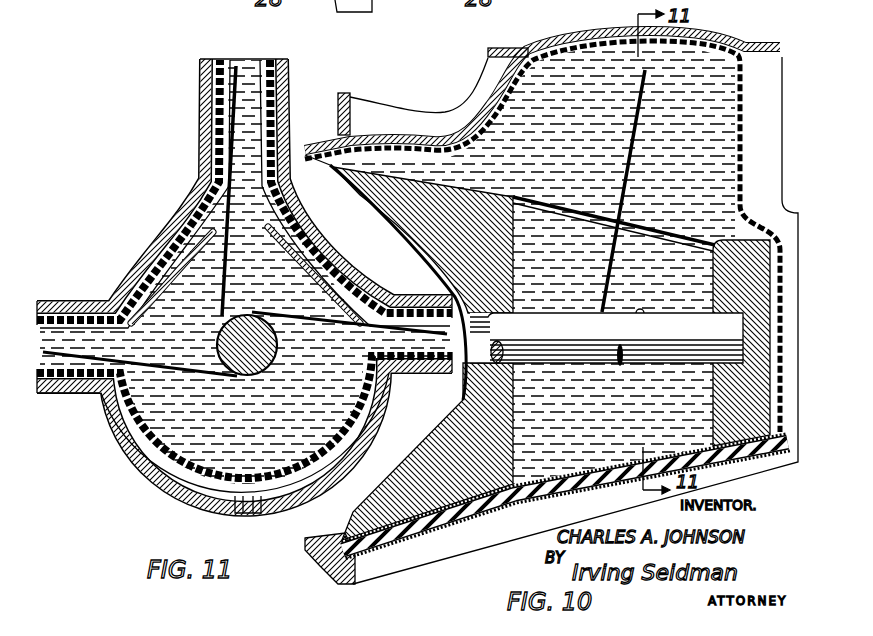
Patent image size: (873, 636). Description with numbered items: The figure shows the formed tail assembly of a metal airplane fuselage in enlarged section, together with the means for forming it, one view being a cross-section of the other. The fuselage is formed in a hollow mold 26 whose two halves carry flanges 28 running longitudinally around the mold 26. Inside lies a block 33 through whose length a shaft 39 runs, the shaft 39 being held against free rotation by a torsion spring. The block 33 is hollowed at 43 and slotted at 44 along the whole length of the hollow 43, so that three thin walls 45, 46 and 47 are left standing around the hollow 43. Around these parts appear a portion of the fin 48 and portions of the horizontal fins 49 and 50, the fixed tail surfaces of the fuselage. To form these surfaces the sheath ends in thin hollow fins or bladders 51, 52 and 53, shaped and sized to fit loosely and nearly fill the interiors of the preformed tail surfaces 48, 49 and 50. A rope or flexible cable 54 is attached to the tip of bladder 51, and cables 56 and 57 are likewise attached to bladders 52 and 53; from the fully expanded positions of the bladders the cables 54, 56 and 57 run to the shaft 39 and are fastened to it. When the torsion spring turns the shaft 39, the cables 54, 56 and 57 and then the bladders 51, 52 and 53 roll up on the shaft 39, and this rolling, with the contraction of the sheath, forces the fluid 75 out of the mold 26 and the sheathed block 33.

In FIG. 11, the hollow mold 26 is at (200, 200).
In FIG. 10, the hollow mold 26 is at (330, 542).
In FIG. 11, the flanges 28 is at (234, 510).
In FIG. 10, the flanges 28 is at (472, 110).
In FIG. 10, the block 33 is at (382, 497).
In FIG. 11, the shaft 39 is at (156, 235).
In FIG. 10, the shaft 39 is at (433, 420).
In FIG. 11, the hollow 43 is at (176, 447).
In FIG. 10, the hollow 43 is at (540, 500).
In FIG. 11, the slot 44 is at (122, 318).
In FIG. 10, the slot 44 is at (330, 172).
In FIG. 11, the thin wall 45 is at (142, 258).
In FIG. 11, the thin wall 46 is at (303, 220).
In FIG. 11, the thin wall 47 is at (152, 428).
In FIG. 11, the fin 48 is at (207, 160).
In FIG. 10, the fin 48 is at (512, 85).
In FIG. 11, the horizontal fin 49 is at (49, 388).
In FIG. 11, the horizontal fin 50 is at (433, 375).
In FIG. 11, the bladder 51 is at (201, 88).
In FIG. 10, the bladder 51 is at (693, 37).
In FIG. 11, the bladder 52 is at (70, 390).
In FIG. 11, the bladder 53 is at (437, 312).
In FIG. 11, the cable 54 is at (232, 128).
In FIG. 10, the cable 54 is at (640, 88).
In FIG. 11, the cable 56 is at (127, 292).
In FIG. 11, the cable 57 is at (362, 343).
In FIG. 11, the fluid 75 is at (202, 482).
In FIG. 10, the fluid 75 is at (487, 520).